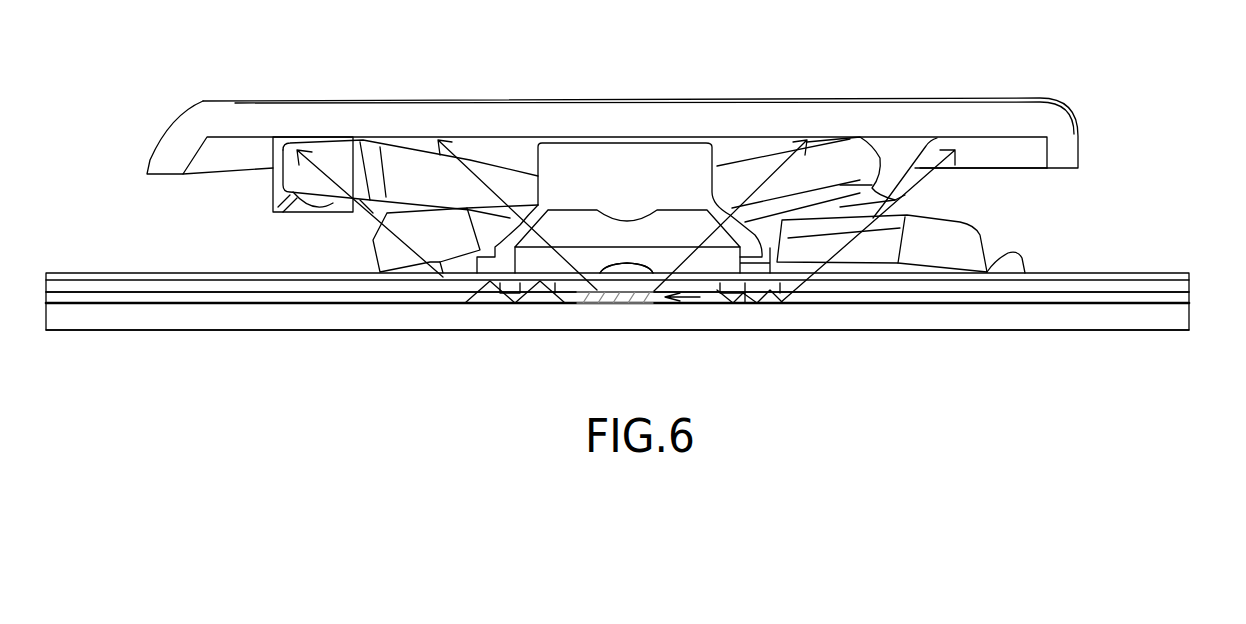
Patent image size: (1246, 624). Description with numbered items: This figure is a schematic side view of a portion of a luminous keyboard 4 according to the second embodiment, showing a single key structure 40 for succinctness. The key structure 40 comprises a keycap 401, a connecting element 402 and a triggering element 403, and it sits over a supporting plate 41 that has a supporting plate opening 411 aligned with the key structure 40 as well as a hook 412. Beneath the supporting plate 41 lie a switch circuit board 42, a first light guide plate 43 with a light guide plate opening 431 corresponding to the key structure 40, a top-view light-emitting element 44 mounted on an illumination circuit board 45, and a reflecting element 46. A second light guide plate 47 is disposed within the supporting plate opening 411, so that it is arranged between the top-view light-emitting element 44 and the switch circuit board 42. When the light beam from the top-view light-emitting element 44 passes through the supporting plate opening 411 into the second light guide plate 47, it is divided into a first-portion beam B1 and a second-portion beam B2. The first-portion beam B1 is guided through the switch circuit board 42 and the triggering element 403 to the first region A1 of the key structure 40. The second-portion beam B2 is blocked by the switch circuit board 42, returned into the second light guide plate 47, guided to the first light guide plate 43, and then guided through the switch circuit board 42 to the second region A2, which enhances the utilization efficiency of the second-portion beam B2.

The luminous keyboard 4 is at (136, 38).
The key structure 40 is at (1170, 96).
The keycap 401 is at (1028, 108).
The connecting element 402 is at (952, 237).
The triggering element 403 is at (653, 163).
The supporting plate 41 is at (1163, 287).
The supporting plate opening 411 is at (760, 300).
The hook 412 is at (1018, 262).
The switch circuit board 42 is at (1103, 277).
The first light guide plate 43 is at (1038, 297).
The light guide plate opening 431 is at (695, 300).
The top-view light-emitting element 44 is at (617, 297).
The illumination circuit board 45 is at (975, 315).
The reflecting element 46 is at (1120, 303).
The second light guide plate 47 is at (612, 287).
The first region A1 is at (442, 88).
The second region A2 is at (305, 88).
The first-portion beam B1 is at (627, 232).
The second-portion beam B2 is at (626, 221).